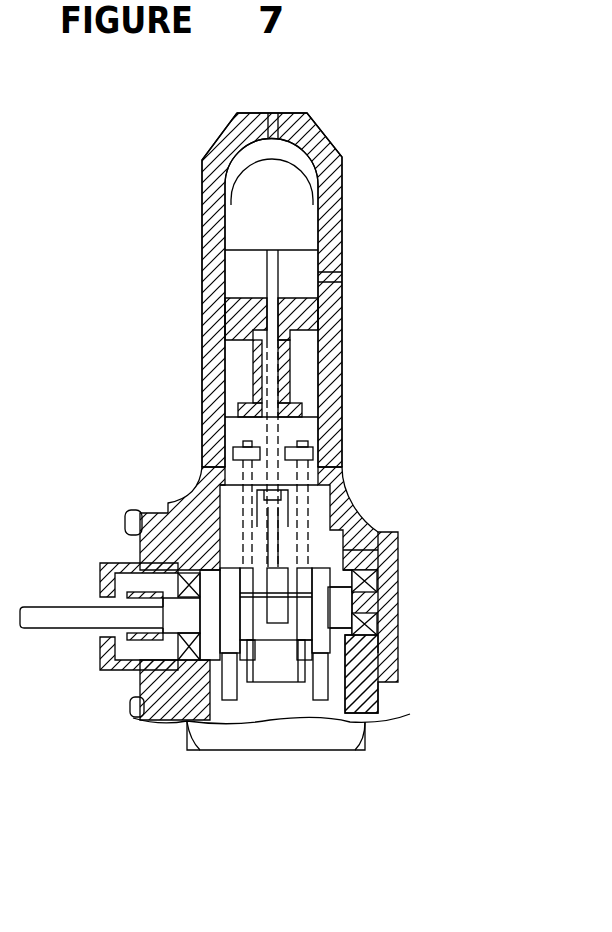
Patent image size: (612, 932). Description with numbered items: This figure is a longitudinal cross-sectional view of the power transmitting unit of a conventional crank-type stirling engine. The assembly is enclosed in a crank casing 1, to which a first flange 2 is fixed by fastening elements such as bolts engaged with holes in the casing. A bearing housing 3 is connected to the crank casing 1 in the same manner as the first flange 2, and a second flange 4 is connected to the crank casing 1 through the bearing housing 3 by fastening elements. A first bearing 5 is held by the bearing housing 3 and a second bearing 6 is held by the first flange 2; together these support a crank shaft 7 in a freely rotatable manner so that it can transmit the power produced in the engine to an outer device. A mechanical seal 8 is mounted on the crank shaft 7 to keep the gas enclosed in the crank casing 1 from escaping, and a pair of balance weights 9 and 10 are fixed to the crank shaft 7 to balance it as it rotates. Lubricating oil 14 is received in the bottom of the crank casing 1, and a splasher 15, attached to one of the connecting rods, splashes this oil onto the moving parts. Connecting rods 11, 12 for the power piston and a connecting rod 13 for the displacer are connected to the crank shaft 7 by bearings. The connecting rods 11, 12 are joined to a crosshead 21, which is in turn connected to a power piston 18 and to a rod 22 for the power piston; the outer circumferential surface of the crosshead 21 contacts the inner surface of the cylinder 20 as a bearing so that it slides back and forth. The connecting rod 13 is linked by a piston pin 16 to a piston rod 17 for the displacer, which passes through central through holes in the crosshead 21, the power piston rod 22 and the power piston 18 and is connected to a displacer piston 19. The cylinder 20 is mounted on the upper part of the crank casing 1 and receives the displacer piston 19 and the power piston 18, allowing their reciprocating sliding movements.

The crank casing 1 is at (357, 683).
The first flange 2 is at (383, 558).
The bearing housing 3 is at (162, 725).
The second flange 4 is at (123, 663).
The first bearing 5 is at (140, 690).
The second bearing 6 is at (370, 628).
The crank shaft 7 is at (43, 632).
The mechanical seal 8 is at (133, 577).
The balance weight 9 is at (230, 690).
The balance weight 10 is at (357, 683).
The connecting rod for power piston 11 is at (322, 548).
The connecting rod for power piston 12 is at (305, 540).
The connecting rod for displacer 13 is at (250, 525).
The lubricating oil 14 is at (280, 703).
The splasher 15 is at (250, 683).
The piston pin 16 is at (262, 538).
The piston rod for displacer 17 is at (272, 377).
The power piston 18 is at (298, 318).
The displacer piston 19 is at (300, 228).
The cylinder 20 is at (325, 360).
The crosshead 21 is at (293, 430).
The rod for power piston 22 is at (293, 392).